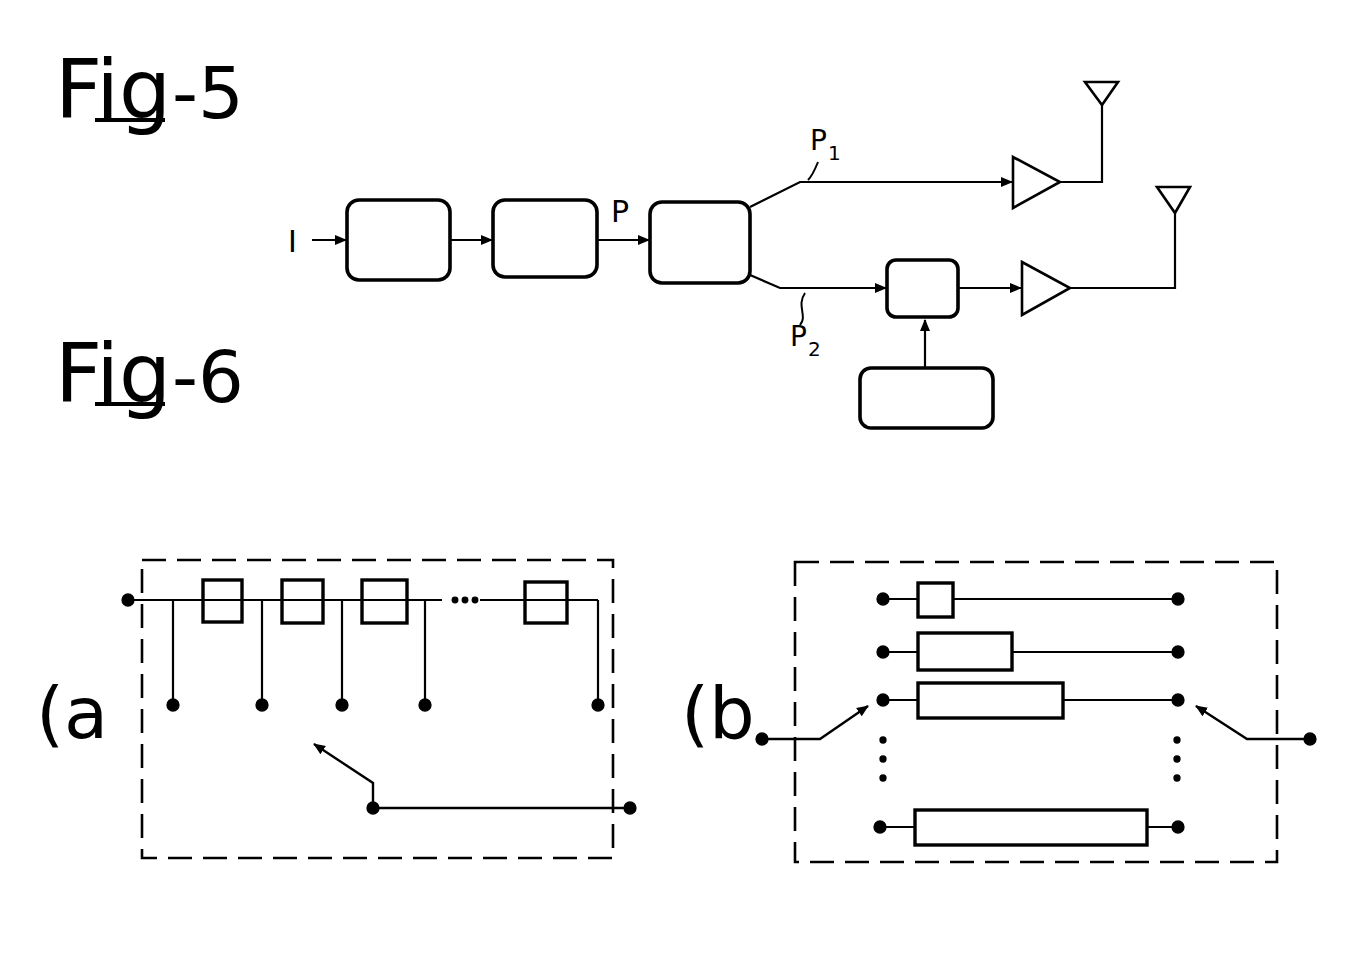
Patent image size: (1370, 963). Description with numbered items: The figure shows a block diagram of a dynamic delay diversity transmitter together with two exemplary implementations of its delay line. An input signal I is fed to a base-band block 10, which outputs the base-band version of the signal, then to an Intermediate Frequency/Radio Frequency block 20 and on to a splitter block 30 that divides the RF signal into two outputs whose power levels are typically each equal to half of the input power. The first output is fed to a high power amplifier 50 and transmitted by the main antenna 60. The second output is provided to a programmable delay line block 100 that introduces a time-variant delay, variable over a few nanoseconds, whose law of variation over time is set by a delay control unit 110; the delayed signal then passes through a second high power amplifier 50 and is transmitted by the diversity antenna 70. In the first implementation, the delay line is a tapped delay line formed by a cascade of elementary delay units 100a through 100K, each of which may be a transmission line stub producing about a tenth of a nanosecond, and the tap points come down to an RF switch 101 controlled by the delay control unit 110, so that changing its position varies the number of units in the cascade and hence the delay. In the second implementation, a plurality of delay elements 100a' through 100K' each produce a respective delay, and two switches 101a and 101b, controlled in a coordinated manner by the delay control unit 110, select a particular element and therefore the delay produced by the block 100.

In FIG. 5, the base-band block 10 is at (396, 210).
In FIG. 5, the Intermediate Frequency/Radio Frequency (IF/RF) block 20 is at (541, 214).
In FIG. 5, the splitter block 30 is at (697, 213).
In FIG. 5, the High Power Amplifier (HPA) block 50 is at (1044, 186).
In FIG. 5, the main antenna 60 is at (1118, 84).
In FIG. 5, the diversity antenna 70 is at (1190, 190).
In FIG. 5, the delay line block 100 is at (904, 270).
In FIG. 6, the delay line block 100 is at (438, 560).
In FIG. 5, the delay control unit (DCU) 110 is at (978, 397).
In FIG. 6, the elementary delay unit 100a is at (224, 557).
In FIG. 6, the elementary delay unit 100K is at (582, 556).
In FIG. 6, the RF switch 101 is at (306, 786).
In FIG. 6, the delay element 100a' is at (1030, 557).
In FIG. 6, the delay element 100K' is at (1029, 798).
In FIG. 6, the switch 101a is at (780, 742).
In FIG. 6, the switch 101b is at (1236, 736).